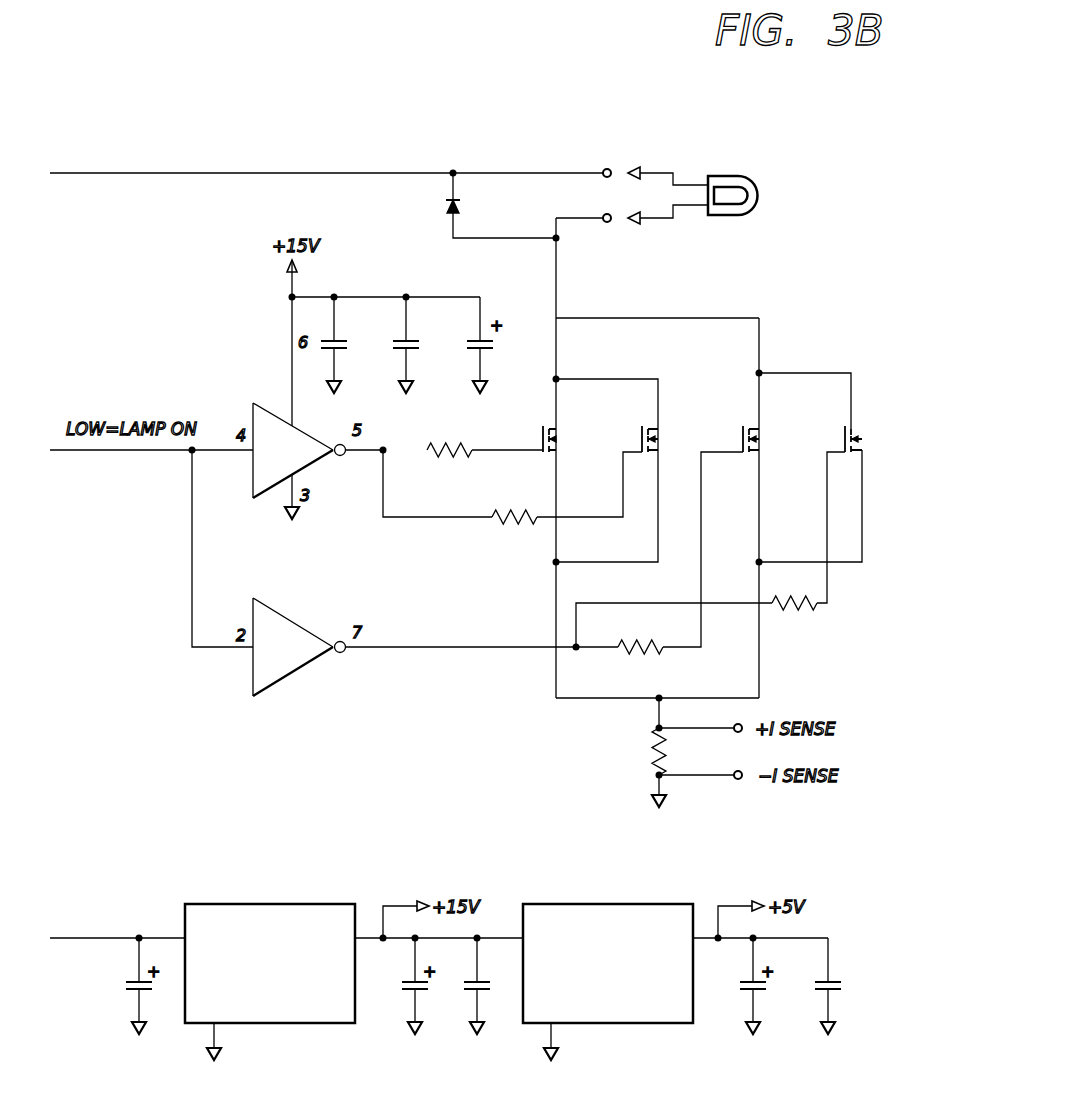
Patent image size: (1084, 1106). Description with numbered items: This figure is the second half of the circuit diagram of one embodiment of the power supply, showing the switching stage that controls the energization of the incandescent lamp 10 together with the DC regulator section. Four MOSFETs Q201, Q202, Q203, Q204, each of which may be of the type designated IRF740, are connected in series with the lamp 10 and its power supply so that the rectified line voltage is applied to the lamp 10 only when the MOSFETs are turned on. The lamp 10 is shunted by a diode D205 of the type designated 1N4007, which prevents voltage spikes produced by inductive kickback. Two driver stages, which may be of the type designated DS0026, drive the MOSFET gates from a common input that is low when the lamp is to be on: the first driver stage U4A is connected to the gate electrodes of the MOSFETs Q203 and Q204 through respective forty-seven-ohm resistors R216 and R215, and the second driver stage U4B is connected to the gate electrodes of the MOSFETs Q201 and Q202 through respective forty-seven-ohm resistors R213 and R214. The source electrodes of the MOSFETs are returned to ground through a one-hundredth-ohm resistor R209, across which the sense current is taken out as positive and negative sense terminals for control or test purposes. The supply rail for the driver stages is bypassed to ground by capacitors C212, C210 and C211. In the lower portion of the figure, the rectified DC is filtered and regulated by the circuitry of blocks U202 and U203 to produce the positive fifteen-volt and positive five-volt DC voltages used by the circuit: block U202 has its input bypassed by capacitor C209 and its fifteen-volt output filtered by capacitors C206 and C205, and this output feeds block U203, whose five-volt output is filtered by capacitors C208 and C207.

The incandescent lamp 10 is at (750, 177).
The diode D205 is at (467, 207).
The capacitor C212 is at (348, 343).
The capacitor C210 is at (420, 343).
The capacitor C211 is at (494, 343).
The second driver stage U4B is at (299, 450).
The first driver stage U4A is at (299, 647).
The resistor R213 is at (453, 444).
The resistor R214 is at (513, 512).
The resistor R215 is at (793, 610).
The resistor R216 is at (637, 655).
The resistor R209 is at (665, 752).
The MOSFET Q201 is at (560, 437).
The MOSFET Q202 is at (698, 433).
The MOSFET Q203 is at (798, 430).
The MOSFET Q204 is at (902, 432).
The voltage regulator block U202 is at (240, 904).
The voltage regulator block U203 is at (570, 904).
The capacitor C209 is at (126, 984).
The capacitor C206 is at (447, 997).
The capacitor C205 is at (492, 988).
The capacitor C208 is at (787, 998).
The capacitor C207 is at (862, 998).